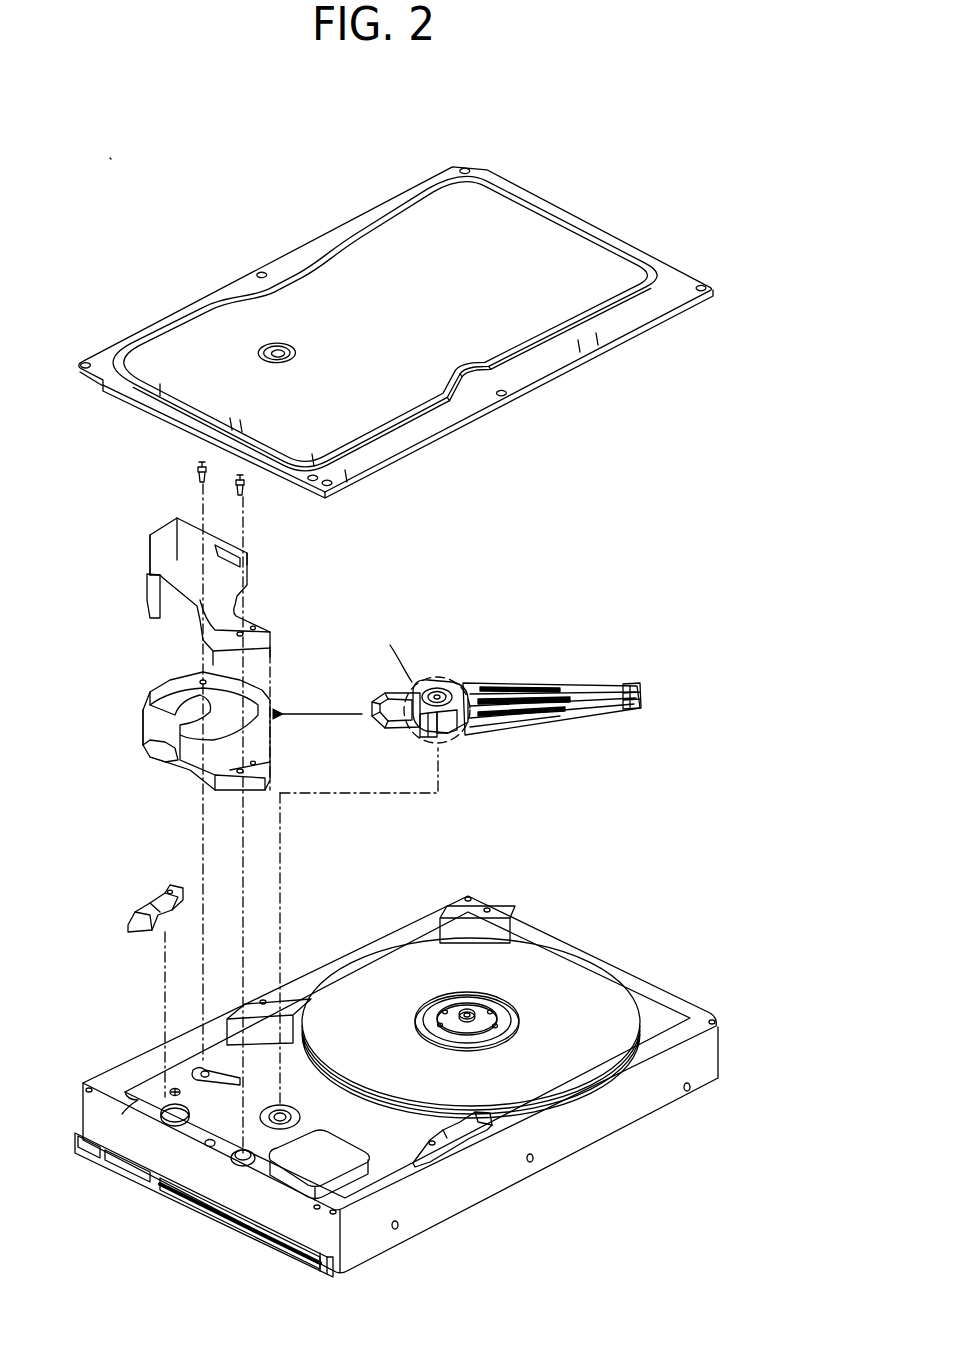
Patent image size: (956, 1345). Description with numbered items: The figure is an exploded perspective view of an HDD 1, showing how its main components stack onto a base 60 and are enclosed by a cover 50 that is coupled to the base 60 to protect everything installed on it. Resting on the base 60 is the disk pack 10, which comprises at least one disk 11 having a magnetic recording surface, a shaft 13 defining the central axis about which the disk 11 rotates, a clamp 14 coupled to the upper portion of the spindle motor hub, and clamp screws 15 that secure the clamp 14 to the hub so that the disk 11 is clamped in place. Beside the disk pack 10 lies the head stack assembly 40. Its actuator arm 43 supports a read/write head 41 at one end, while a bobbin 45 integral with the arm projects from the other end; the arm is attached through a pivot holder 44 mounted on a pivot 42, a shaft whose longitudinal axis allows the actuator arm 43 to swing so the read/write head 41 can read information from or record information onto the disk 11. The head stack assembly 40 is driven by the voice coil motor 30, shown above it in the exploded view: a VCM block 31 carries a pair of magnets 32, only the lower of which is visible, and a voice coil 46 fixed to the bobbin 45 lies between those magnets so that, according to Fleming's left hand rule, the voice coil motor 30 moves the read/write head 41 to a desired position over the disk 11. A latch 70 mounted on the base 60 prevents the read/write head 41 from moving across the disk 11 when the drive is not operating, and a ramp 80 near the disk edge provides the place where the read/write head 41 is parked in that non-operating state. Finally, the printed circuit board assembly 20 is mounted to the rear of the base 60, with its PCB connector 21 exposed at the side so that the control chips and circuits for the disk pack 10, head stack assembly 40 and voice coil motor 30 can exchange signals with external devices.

The HDD 1 is at (110, 158).
The disk pack 10 is at (504, 995).
The disk 11 is at (470, 953).
The shaft 13 is at (472, 1012).
The clamp 14 is at (517, 1020).
The clamp screws 15 is at (533, 1037).
The printed circuit board assembly 20 is at (204, 1229).
The PCB connector 21 is at (187, 1210).
The voice coil motor 30 is at (159, 684).
The VCM block 31 is at (170, 700).
The magnets 32 is at (187, 723).
The head stack assembly 40 is at (496, 696).
The read/write head 41 is at (635, 688).
The pivot 42 is at (437, 686).
The actuator arm 43 is at (585, 687).
The pivot holder 44 is at (453, 733).
The bobbin 45 is at (383, 728).
The voice coil 46 is at (395, 730).
The cover 50 is at (520, 228).
The base 60 is at (596, 1130).
The latch 70 is at (125, 930).
The ramp 80 is at (453, 1142).